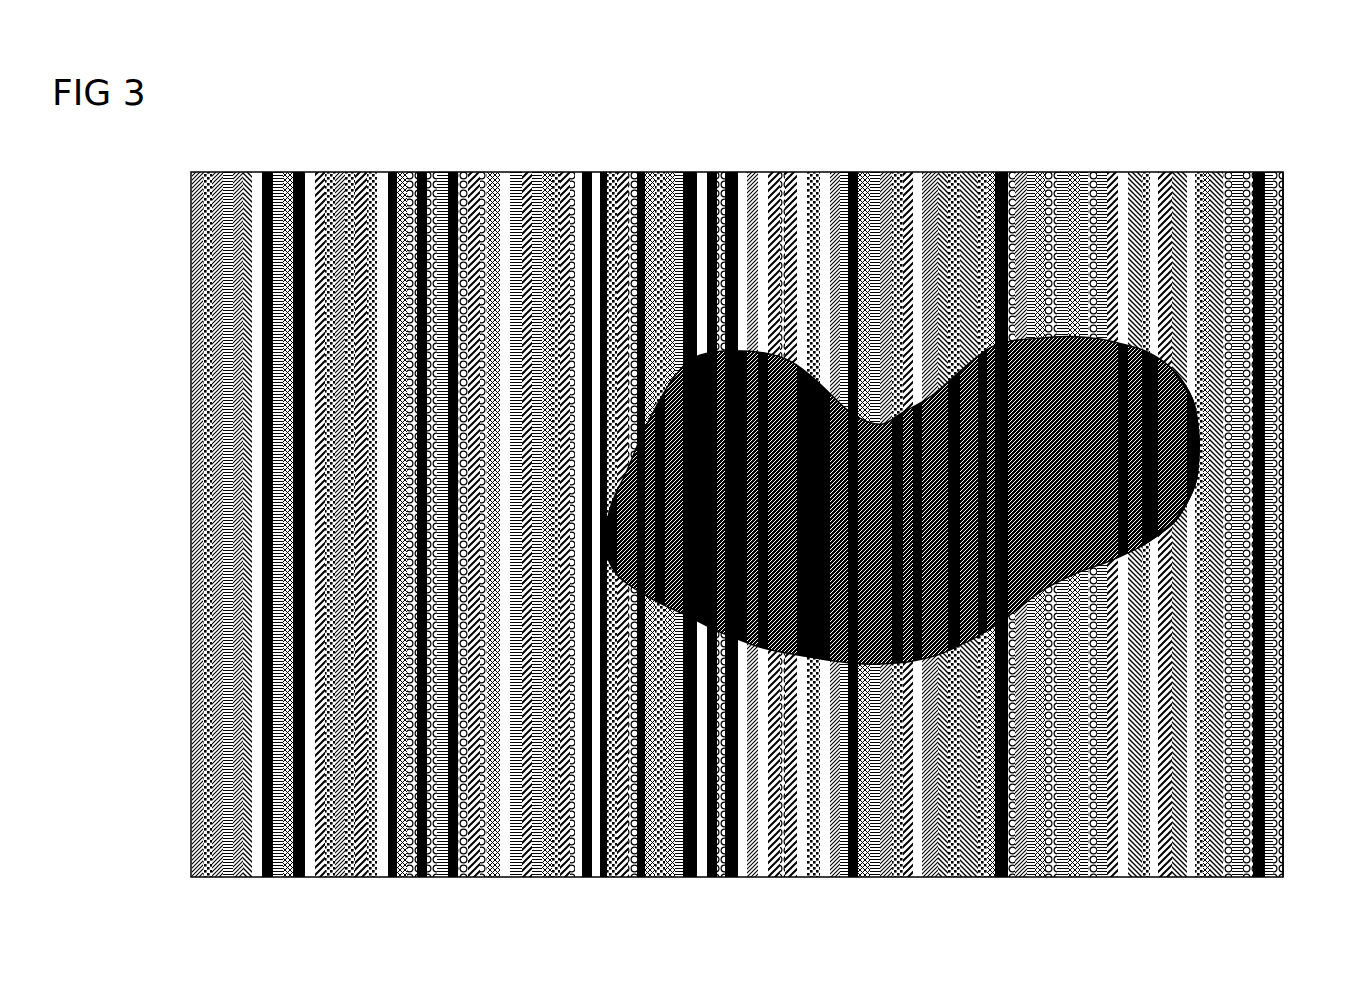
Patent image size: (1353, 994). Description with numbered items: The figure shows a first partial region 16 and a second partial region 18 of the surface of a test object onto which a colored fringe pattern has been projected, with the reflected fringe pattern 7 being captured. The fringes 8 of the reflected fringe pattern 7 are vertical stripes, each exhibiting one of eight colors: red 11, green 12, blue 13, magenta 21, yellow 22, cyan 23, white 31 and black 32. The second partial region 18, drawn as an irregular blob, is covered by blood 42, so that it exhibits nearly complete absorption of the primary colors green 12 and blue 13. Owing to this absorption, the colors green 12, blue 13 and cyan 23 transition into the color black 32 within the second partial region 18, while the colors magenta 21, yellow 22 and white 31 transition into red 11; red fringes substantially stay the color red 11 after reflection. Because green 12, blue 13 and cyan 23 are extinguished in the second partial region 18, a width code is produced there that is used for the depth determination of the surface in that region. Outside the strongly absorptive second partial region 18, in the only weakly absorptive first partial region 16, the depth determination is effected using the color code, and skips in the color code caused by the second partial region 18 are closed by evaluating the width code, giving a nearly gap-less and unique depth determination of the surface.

The reflected fringe pattern 7 is at (355, 144).
The fringes 8 is at (527, 102).
The red 11 is at (836, 172).
The green 12 is at (897, 172).
The blue 13 is at (938, 172).
The first partial region 16 is at (1288, 264).
The second partial region 18 is at (1190, 400).
The magenta 21 is at (992, 172).
The yellow 22 is at (783, 172).
The cyan 23 is at (1030, 172).
The white 31 is at (744, 172).
The black 32 is at (688, 172).
The blood 42 is at (1198, 530).